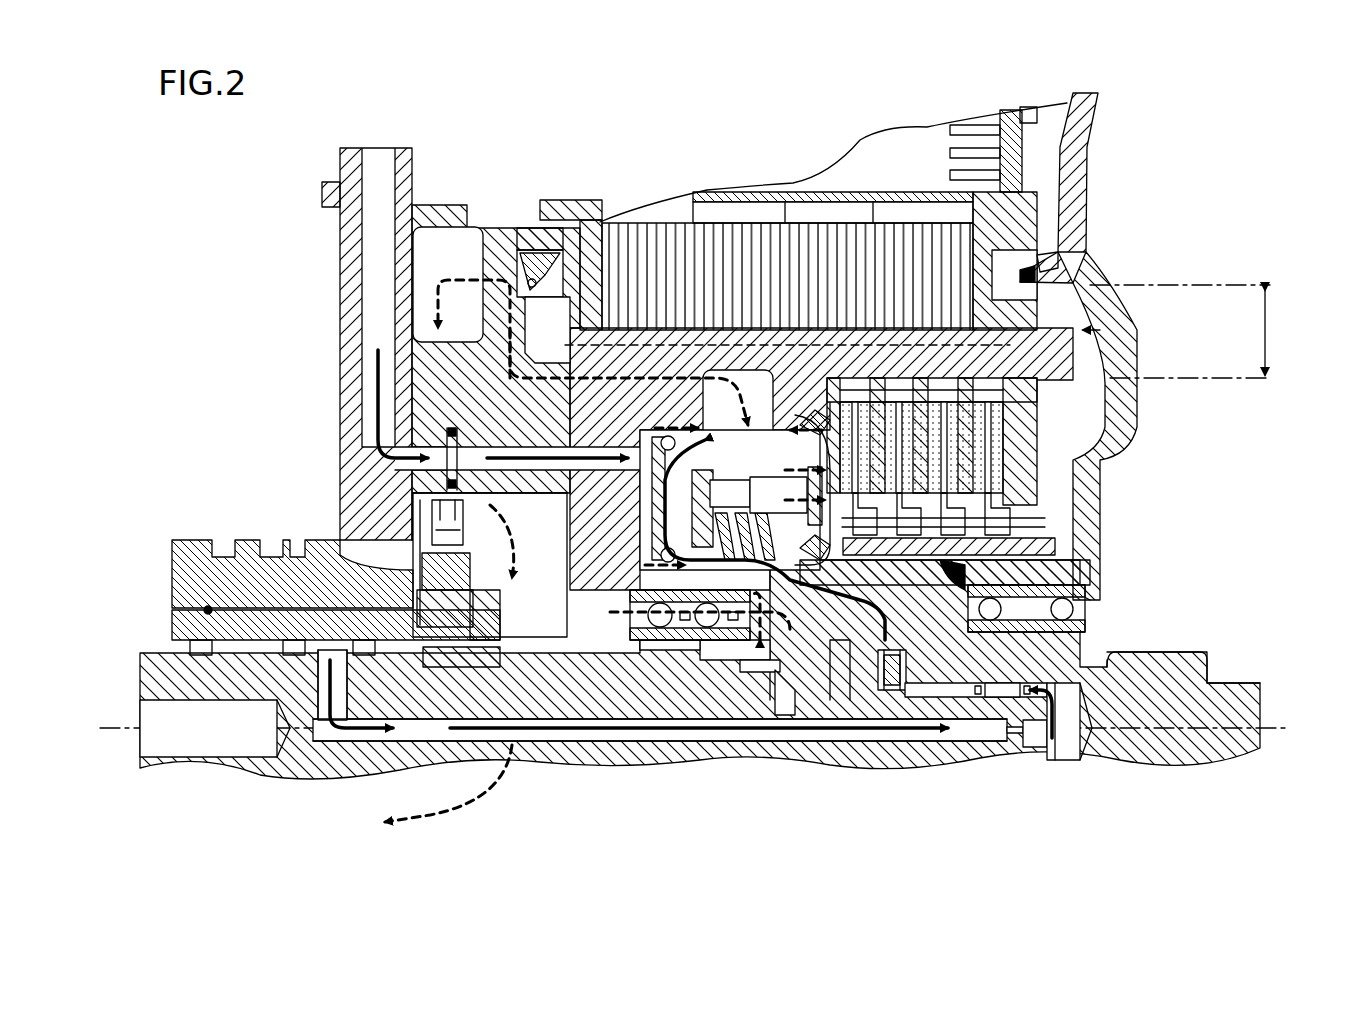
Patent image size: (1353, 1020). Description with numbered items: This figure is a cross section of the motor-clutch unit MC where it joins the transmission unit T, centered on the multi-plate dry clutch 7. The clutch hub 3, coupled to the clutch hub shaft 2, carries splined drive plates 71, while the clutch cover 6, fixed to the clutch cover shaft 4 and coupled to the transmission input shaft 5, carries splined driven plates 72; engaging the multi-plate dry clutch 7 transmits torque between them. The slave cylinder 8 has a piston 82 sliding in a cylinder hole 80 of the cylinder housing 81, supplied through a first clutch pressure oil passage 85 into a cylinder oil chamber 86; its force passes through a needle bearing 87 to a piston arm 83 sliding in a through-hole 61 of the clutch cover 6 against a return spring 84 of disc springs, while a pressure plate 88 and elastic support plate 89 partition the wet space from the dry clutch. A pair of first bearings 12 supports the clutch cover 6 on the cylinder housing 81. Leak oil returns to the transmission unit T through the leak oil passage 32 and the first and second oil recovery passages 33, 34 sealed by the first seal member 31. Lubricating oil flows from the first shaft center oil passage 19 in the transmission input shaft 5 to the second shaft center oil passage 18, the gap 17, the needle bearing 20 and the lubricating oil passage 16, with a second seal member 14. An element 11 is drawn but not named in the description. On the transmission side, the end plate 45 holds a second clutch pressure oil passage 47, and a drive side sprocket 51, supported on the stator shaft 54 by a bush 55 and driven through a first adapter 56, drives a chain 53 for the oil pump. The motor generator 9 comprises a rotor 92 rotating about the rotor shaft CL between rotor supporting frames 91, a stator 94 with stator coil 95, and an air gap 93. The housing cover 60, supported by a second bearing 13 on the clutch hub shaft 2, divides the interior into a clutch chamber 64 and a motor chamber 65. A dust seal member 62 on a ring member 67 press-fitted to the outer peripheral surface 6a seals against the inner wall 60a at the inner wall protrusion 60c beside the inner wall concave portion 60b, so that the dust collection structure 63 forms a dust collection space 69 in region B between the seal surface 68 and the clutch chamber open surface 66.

The clutch hub shaft 2 is at (1150, 745).
The clutch hub 3 is at (1050, 565).
The clutch cover shaft 4 is at (810, 700).
The transmission input shaft 5 is at (600, 770).
The clutch cover 6 is at (1105, 405).
The outer peripheral surface 6a is at (1085, 310).
The multi-plate dry clutch 7 is at (999, 466).
The slave cylinder 8 is at (570, 530).
The motor generator 9 is at (925, 97).
The oil passage 11 is at (445, 432).
The first bearings 12 is at (640, 600).
The second bearing 13 is at (1085, 612).
The second seal member 14 is at (940, 700).
The lubricating oil passage 16 is at (838, 690).
The gap 17 is at (1030, 742).
The second shaft center oil passage 18 is at (975, 740).
The first shaft center oil passage 19 is at (540, 742).
The needle bearing 20 is at (890, 692).
The first seal member 31 is at (533, 250).
The leak oil passage 32 is at (765, 440).
The first oil recovery passage 33 is at (600, 375).
The second oil recovery passage 34 is at (490, 298).
The end plate 45 is at (355, 335).
The second clutch pressure oil passage 47 is at (360, 232).
The drive side sprocket 51 is at (455, 565).
The chain 53 is at (435, 510).
The stator shaft 54 is at (285, 610).
The bush 55 is at (480, 610).
The first adapter 56 is at (452, 668).
The housing cover 60 is at (1085, 210).
The inner wall 60a is at (1062, 185).
The inner wall concave portion 60b is at (1125, 372).
The inner wall protrusion 60c is at (1075, 262).
The through-hole 61 is at (824, 487).
The dust seal member 62 is at (1050, 280).
The dust collection structure 63 is at (1100, 335).
The clutch chamber 64 is at (1085, 440).
The motor chamber 65 is at (1075, 150).
The clutch chamber open surface 66 is at (1255, 380).
The ring member 67 is at (1042, 260).
The seal surface 68 is at (1218, 282).
The dust collection space 69 is at (1100, 330).
The drive plate 71 is at (1010, 525).
The driven plate 72 is at (900, 455).
The cylinder hole 80 is at (690, 445).
The cylinder housing 81 is at (500, 440).
The piston 82 is at (655, 500).
The piston arm 83 is at (775, 480).
The return spring 84 is at (718, 652).
The first clutch pressure oil passage 85 is at (555, 508).
The cylinder oil chamber 86 is at (645, 560).
The needle bearing 87 is at (665, 530).
The pressure plate 88 is at (765, 665).
The elastic support plate 89 is at (790, 695).
The rotor supporting frames 91 is at (593, 227).
The rotor 92 is at (707, 243).
The air gap 93 is at (840, 190).
The stator 94 is at (917, 185).
The stator coil 95 is at (1005, 108).
The region B is at (1274, 332).
The rotor shaft CL is at (1080, 745).
The motor-clutch unit MC is at (1130, 118).
The transmission unit T is at (290, 285).